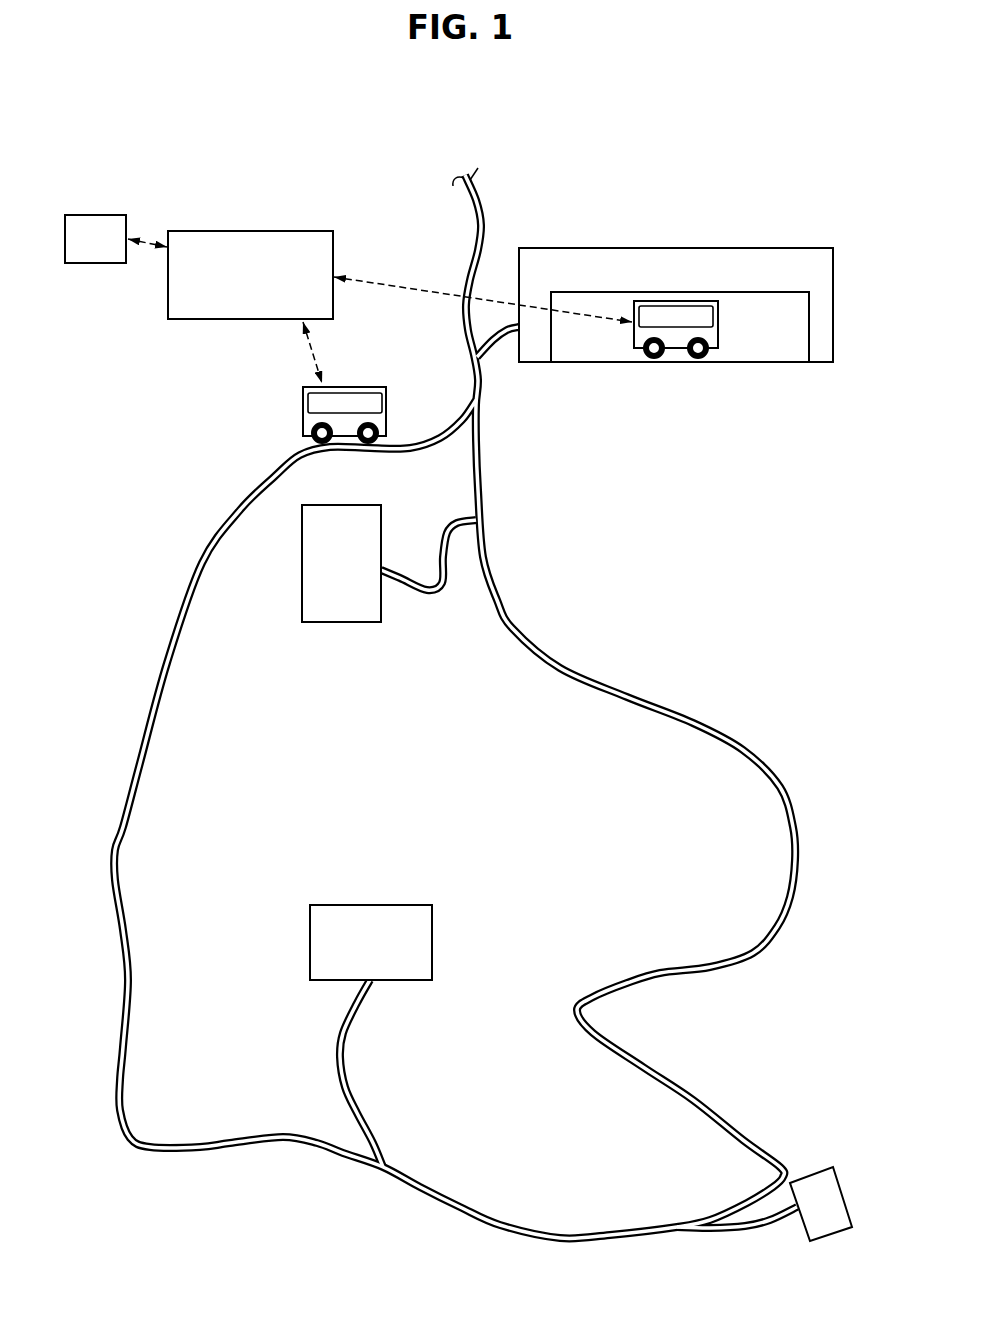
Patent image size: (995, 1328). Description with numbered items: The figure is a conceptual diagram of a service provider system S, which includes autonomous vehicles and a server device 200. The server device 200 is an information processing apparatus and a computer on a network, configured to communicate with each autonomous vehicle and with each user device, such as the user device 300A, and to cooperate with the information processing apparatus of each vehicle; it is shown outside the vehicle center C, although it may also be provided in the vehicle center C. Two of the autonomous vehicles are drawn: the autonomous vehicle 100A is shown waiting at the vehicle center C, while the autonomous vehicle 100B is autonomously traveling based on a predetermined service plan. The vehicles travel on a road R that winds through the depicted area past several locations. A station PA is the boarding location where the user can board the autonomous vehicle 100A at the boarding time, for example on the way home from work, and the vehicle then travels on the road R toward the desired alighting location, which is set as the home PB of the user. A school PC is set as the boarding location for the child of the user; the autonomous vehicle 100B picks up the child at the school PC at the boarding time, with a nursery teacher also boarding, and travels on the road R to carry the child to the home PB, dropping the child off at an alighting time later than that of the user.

The service provider system S is at (663, 158).
The road R is at (690, 977).
The vehicle center C is at (625, 248).
The server device 200 is at (212, 231).
The user device 300A is at (119, 263).
The autonomous vehicle 100A is at (677, 301).
The autonomous vehicle 100B is at (350, 387).
The station PA is at (327, 622).
The home PB is at (805, 1168).
The school PC is at (415, 980).